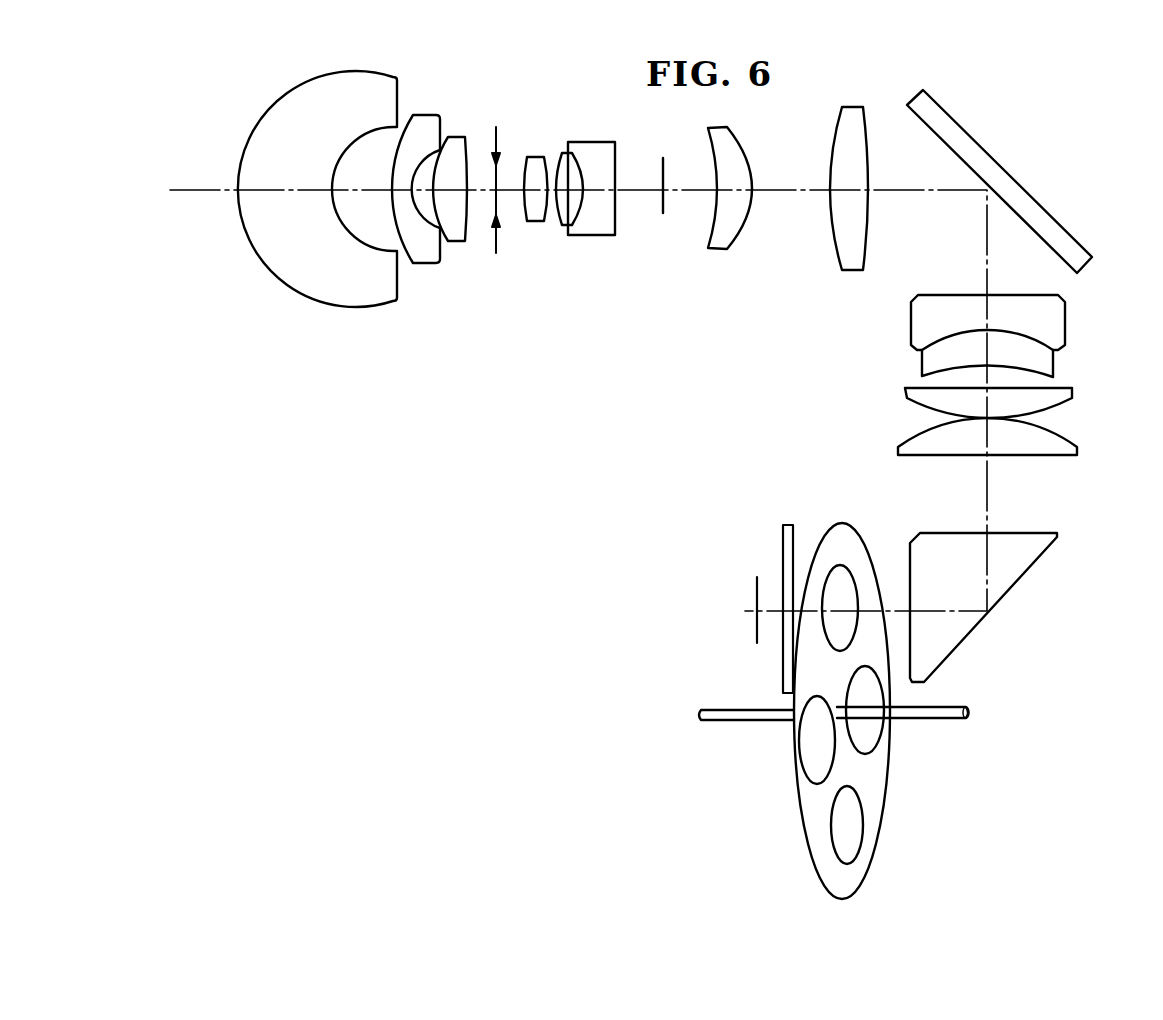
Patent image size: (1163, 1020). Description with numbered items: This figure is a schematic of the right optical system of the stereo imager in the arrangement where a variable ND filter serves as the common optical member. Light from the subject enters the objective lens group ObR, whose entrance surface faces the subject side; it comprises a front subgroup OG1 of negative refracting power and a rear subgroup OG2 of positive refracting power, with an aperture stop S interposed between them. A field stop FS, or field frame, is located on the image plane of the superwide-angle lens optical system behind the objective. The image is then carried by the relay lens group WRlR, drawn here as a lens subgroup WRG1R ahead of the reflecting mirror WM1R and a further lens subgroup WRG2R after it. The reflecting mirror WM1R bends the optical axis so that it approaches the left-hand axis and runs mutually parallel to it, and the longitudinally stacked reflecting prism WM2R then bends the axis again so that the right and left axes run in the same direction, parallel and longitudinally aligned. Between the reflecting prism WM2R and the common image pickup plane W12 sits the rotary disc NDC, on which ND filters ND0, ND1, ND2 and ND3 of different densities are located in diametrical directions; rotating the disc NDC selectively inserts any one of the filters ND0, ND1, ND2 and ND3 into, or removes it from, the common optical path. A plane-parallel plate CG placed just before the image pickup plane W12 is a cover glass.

The objective lens group ObR is at (615, 368).
The front subgroup OG1 is at (464, 315).
The aperture stop S is at (502, 315).
The rear subgroup OG2 is at (615, 315).
The field stop FS is at (668, 315).
The relay lens group WRlR is at (862, 463).
The first relay lens group WRG1R is at (867, 315).
The reflecting mirror WM1R is at (1016, 162).
The second relay lens group WRG2R is at (895, 297).
The reflecting prism WM2R is at (1008, 624).
The cover glass CG is at (790, 524).
The common image pickup plane W12 is at (757, 643).
The rotary disc NDC is at (818, 855).
The ND filter ND0 is at (828, 592).
The ND filter ND1 is at (872, 740).
The ND filter ND2 is at (857, 835).
The ND filter ND3 is at (808, 752).